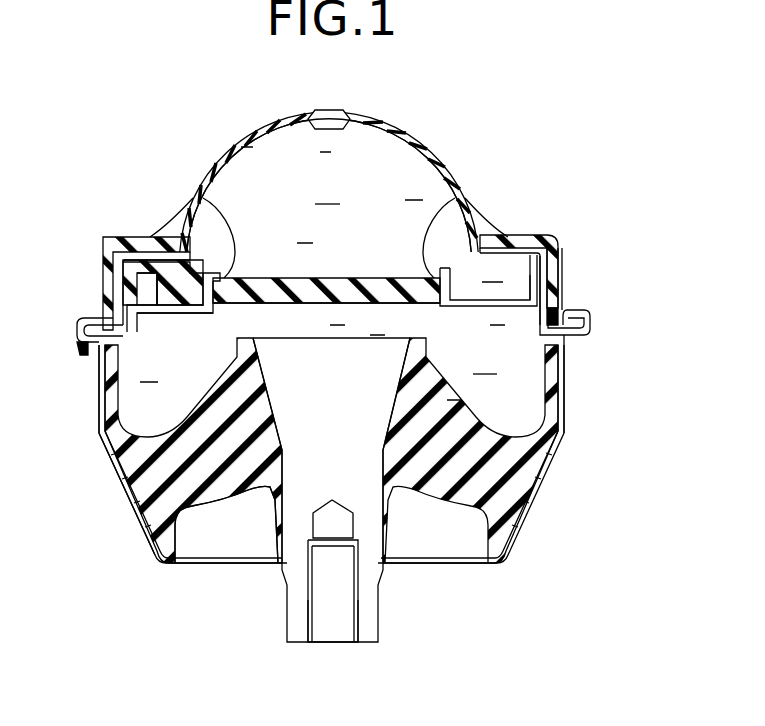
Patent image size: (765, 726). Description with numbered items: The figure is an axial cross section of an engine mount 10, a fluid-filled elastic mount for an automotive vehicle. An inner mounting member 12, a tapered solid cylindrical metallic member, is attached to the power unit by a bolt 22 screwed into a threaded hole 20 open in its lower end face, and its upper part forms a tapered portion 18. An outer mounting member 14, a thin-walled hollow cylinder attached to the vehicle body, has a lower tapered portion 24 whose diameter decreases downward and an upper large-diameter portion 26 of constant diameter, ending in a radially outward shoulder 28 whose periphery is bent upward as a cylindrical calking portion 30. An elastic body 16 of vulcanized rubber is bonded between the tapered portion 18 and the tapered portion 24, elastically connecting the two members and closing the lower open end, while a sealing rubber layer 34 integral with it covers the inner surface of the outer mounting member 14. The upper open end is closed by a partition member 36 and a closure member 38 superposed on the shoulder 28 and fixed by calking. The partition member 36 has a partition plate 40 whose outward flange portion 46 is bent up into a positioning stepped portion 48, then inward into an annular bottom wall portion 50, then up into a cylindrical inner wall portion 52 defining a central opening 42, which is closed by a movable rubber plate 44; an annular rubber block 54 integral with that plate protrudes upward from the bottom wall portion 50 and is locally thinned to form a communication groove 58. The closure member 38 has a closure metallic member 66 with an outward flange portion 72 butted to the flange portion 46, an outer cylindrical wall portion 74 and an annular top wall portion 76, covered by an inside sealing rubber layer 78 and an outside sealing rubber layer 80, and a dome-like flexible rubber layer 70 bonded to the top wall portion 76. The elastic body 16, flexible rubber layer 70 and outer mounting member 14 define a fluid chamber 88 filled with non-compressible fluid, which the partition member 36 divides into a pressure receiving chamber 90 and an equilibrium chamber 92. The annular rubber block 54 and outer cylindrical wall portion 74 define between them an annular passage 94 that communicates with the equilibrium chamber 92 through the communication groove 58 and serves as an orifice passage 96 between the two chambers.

The engine mount 10 is at (488, 114).
The inner mounting member 12 is at (343, 516).
The outer mounting member 14 is at (326, 454).
The elastic body 16 is at (212, 493).
The tapered portion 18 is at (331, 477).
The threaded hole 20 is at (320, 623).
The bolt 22 is at (335, 632).
The tapered portion 24 is at (127, 500).
The large-diameter portion 26 is at (100, 403).
The shoulder 28 is at (590, 334).
The calking portion 30 is at (80, 329).
The sealing rubber layer 34 is at (553, 407).
The partition member 36 is at (577, 163).
The closure member 38 is at (122, 263).
The partition plate 40 is at (552, 266).
The central opening 42 is at (210, 273).
The movable rubber plate 44 is at (407, 281).
The outward flange portion 46 is at (568, 337).
The positioning stepped portion 48 is at (530, 282).
The annular bottom wall portion 50 is at (173, 313).
The cylindrical inner wall portion 52 is at (110, 253).
The annular rubber block 54 is at (118, 284).
The communication groove 58 is at (473, 258).
The closure metallic member 66 is at (82, 347).
The flexible rubber layer 70 is at (242, 148).
The outward flange portion 72 is at (562, 320).
The outer cylindrical wall portion 74 is at (556, 272).
The annular top wall portion 76 is at (505, 248).
The inside sealing rubber layer 78 is at (548, 285).
The outside sealing rubber layer 80 is at (547, 267).
The fluid chamber 88 is at (242, 197).
The pressure receiving chamber 90 is at (485, 365).
The equilibrium chamber 92 is at (327, 195).
The annular passage 94 is at (137, 294).
The orifice passage 96 is at (143, 297).